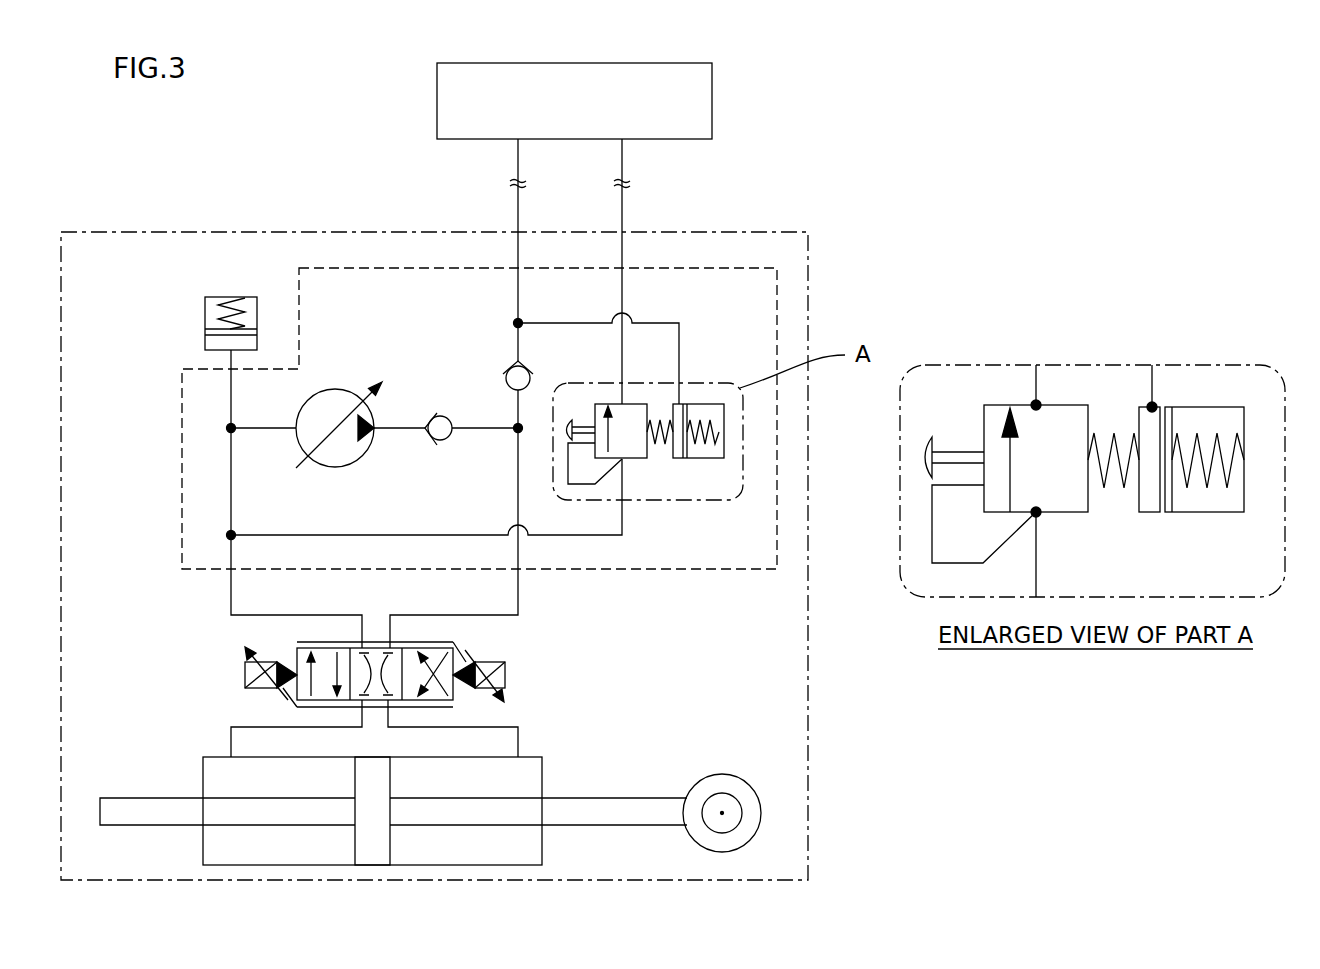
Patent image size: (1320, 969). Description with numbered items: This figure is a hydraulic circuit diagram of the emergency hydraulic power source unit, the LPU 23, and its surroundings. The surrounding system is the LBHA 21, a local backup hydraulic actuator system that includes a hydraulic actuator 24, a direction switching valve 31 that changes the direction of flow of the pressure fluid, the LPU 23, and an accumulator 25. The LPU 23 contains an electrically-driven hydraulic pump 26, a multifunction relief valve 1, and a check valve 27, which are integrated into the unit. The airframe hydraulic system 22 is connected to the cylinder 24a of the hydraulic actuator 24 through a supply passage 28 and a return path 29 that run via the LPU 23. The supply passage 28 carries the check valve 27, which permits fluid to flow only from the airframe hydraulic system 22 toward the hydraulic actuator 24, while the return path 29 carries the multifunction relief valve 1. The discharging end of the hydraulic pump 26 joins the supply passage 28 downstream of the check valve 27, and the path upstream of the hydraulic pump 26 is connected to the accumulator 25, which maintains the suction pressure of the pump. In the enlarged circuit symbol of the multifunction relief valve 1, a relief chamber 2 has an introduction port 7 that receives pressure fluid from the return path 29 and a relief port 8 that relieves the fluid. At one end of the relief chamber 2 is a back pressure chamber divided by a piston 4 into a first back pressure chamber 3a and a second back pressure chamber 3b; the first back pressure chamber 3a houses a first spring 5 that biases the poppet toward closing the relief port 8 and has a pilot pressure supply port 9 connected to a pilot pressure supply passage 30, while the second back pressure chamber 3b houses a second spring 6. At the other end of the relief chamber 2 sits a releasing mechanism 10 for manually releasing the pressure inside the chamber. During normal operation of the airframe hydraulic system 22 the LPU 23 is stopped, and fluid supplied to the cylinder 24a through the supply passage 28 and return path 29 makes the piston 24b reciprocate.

The multifunction relief valve 1 is at (636, 397).
The relief chamber 2 is at (1062, 502).
The first back pressure chamber 3a is at (1148, 508).
The second back pressure chamber 3b is at (1213, 506).
The piston 4 is at (1167, 408).
The first spring 5 is at (1118, 445).
The second spring 6 is at (1222, 430).
The introduction port 7 is at (1040, 518).
The relief port 8 is at (1030, 403).
The pilot pressure supply port 9 is at (1150, 404).
The releasing mechanism 10 is at (958, 452).
The LBHA 21 is at (808, 232).
The airframe hydraulic system 22 is at (697, 94).
The LPU 23 is at (777, 569).
The hydraulic actuator 24 is at (430, 786).
The cylinder 24a is at (542, 758).
The piston 24b is at (390, 838).
The accumulator 25 is at (205, 297).
The hydraulic pump 26 is at (333, 388).
The check valve 27 is at (507, 364).
The supply passage 28 is at (518, 205).
The return path 29 is at (622, 205).
The pilot pressure supply passage 30 is at (668, 323).
The direction switching valve 31 is at (505, 662).